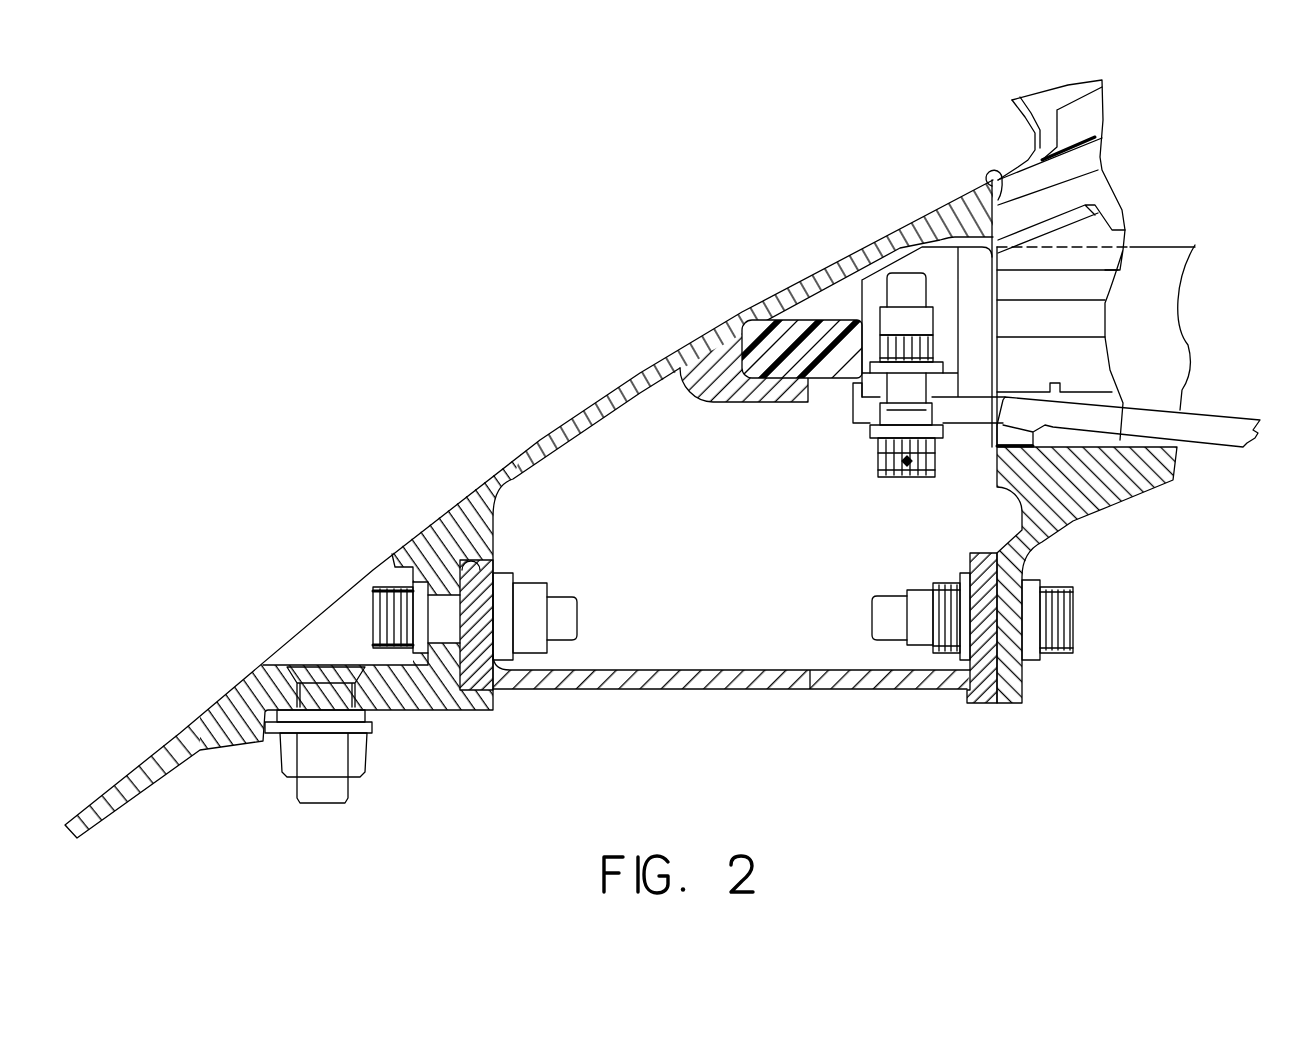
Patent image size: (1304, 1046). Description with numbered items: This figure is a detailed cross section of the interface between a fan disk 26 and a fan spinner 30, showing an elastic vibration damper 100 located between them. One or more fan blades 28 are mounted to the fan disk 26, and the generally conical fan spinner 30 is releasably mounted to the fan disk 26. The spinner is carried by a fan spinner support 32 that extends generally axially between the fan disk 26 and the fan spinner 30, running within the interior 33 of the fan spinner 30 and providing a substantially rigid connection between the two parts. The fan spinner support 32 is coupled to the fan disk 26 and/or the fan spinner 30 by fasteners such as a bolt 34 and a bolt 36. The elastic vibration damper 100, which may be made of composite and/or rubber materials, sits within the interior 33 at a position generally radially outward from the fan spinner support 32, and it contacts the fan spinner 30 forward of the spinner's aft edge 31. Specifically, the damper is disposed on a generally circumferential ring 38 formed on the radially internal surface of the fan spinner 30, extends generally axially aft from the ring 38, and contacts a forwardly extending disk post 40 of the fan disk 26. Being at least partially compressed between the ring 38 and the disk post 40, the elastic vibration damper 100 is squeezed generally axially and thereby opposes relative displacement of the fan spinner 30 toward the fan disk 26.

The fan disk 26 is at (1043, 493).
The fan blade 28 is at (1040, 112).
The fan spinner 30 is at (562, 420).
The aft edge 31 is at (1000, 182).
The fan spinner support 32 is at (750, 682).
The interior 33 is at (622, 640).
The bolt 34 is at (383, 607).
The bolt 36 is at (1053, 622).
The ring 38 is at (777, 390).
The disk post 40 is at (873, 282).
The elastic vibration damper 100 is at (787, 340).